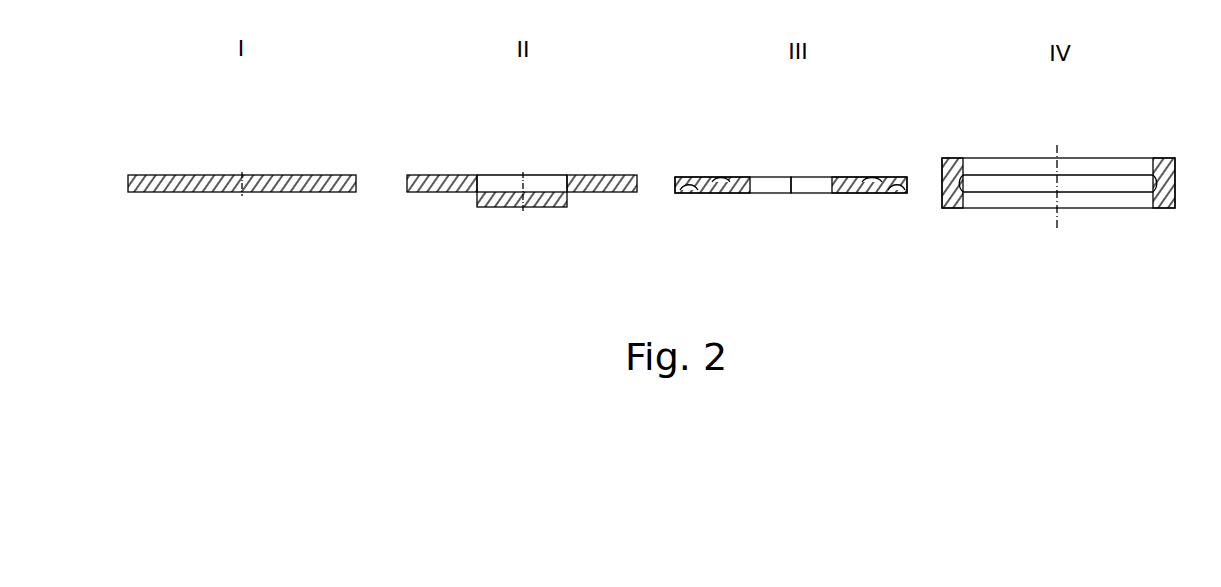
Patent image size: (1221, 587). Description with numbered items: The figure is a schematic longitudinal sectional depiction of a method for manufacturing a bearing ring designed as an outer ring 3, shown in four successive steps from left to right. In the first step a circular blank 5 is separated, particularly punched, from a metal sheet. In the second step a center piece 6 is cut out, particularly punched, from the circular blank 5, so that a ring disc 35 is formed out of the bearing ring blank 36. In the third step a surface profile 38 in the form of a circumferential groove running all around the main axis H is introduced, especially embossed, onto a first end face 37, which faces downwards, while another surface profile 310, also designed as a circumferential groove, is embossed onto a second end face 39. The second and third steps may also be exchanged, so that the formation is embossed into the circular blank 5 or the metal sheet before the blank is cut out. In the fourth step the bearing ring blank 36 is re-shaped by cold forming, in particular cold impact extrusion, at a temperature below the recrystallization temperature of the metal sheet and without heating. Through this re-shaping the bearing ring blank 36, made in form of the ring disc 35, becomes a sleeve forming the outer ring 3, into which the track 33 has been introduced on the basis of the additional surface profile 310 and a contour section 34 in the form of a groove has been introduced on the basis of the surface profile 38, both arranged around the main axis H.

The circular blank 5 is at (185, 193).
The ring disc 35 is at (430, 175).
The bearing ring blank 36 is at (522, 183).
The center piece 6 is at (503, 202).
The second end face 39 is at (742, 172).
The additional surface profile 310 is at (872, 177).
The surface profile 38 is at (690, 194).
The first end face 37 is at (840, 194).
The outer ring 3 is at (1160, 163).
The contour section 34 is at (936, 165).
The track 33 is at (1015, 183).
The main axis H is at (1063, 163).